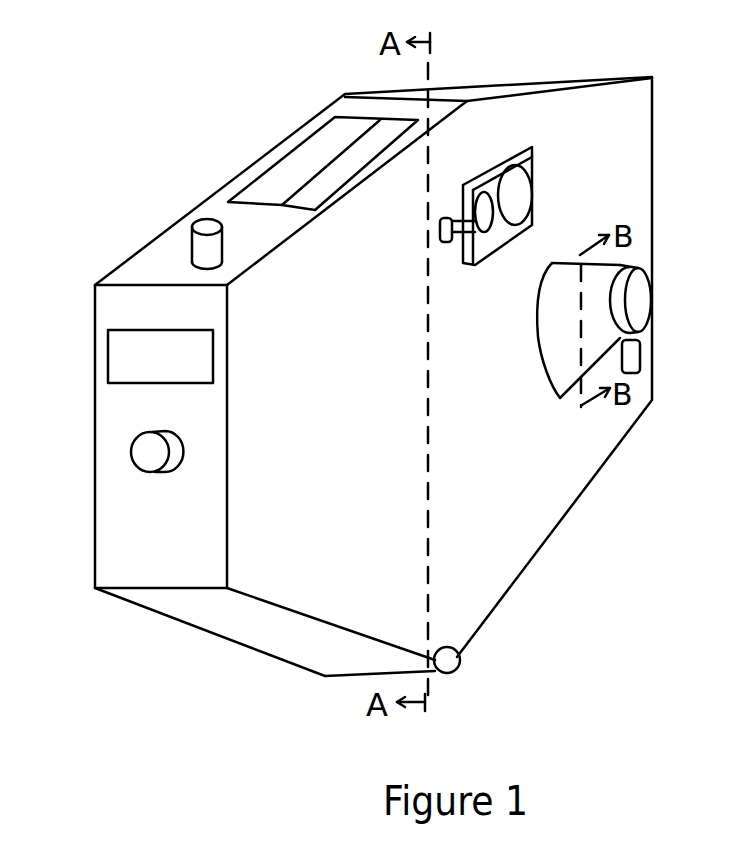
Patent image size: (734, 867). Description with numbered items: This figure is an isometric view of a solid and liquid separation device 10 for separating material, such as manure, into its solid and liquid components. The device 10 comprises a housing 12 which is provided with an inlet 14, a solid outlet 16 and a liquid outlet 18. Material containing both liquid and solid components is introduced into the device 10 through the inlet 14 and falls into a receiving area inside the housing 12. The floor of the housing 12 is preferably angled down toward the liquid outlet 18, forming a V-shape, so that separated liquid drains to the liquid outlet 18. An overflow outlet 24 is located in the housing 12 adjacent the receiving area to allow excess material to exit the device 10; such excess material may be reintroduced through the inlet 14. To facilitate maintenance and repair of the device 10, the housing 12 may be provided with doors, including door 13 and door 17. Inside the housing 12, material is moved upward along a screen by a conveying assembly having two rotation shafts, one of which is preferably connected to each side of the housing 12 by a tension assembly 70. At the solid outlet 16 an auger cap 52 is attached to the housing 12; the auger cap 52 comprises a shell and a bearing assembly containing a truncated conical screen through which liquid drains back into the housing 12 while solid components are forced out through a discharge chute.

The solid and liquid separation device 10 is at (131, 110).
The housing 12 is at (568, 503).
The door 13 is at (290, 162).
The inlet 14 is at (193, 217).
The solid outlet 16 is at (558, 260).
The door 17 is at (110, 352).
The liquid outlet 18 is at (460, 668).
The overflow outlet 24 is at (127, 455).
The auger cap 52 is at (662, 302).
The tension assembly 70 is at (516, 128).